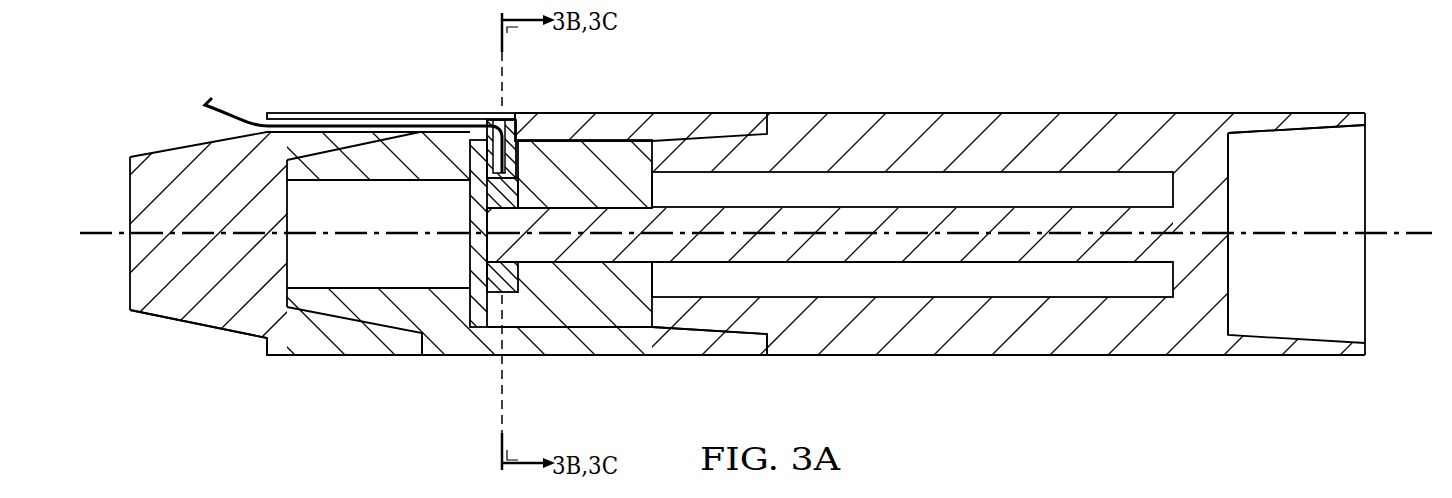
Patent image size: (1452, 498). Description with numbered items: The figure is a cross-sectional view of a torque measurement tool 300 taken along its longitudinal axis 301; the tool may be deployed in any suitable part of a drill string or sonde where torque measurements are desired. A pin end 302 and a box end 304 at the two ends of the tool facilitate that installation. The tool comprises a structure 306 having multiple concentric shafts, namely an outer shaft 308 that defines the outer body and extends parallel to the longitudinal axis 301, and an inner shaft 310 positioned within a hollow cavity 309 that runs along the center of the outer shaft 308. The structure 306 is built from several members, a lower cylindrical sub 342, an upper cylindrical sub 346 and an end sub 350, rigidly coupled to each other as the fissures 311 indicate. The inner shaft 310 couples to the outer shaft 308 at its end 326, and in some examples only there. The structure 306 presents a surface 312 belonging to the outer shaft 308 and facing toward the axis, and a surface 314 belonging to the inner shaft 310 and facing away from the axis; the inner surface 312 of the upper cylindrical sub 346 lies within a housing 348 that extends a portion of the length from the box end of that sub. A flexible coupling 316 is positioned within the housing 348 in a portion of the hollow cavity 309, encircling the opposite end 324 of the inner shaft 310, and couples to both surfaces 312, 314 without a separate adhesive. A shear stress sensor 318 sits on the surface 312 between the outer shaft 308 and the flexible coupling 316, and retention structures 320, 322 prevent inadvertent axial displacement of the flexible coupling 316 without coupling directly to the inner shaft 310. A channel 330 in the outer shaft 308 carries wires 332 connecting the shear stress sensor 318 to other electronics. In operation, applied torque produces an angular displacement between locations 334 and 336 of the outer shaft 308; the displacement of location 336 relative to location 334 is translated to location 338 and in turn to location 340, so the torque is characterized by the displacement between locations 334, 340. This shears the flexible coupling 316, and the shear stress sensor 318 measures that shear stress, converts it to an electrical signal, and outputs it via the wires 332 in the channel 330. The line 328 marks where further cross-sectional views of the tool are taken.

The torque measurement tool 300 is at (842, 68).
The longitudinal axis 301 is at (95, 230).
The pin end 302 is at (197, 328).
The box end 304 is at (1357, 258).
The structure 306 is at (452, 146).
The shaft 308 is at (1087, 122).
The hollow cavity 309 is at (967, 188).
The shaft 310 is at (740, 222).
The fissures 311 is at (327, 150).
The surface 312 is at (478, 312).
The surface 314 is at (830, 264).
The flexible coupling 316 is at (497, 190).
The shear stress sensor 318 is at (515, 178).
The retention structure 320 is at (640, 336).
The retention structure 322 is at (440, 352).
The end 324 is at (492, 245).
The end 326 is at (1173, 248).
The line 328 is at (503, 410).
The channel 330 is at (353, 116).
The wires 332 is at (238, 111).
The location 334 is at (483, 390).
The location 336 is at (1198, 345).
The location 338 is at (1216, 224).
The location 340 is at (524, 328).
The lower cylindrical sub 342 is at (1083, 347).
The upper cylindrical sub 346 is at (478, 313).
The housing 348 is at (610, 123).
The end sub 350 is at (275, 343).